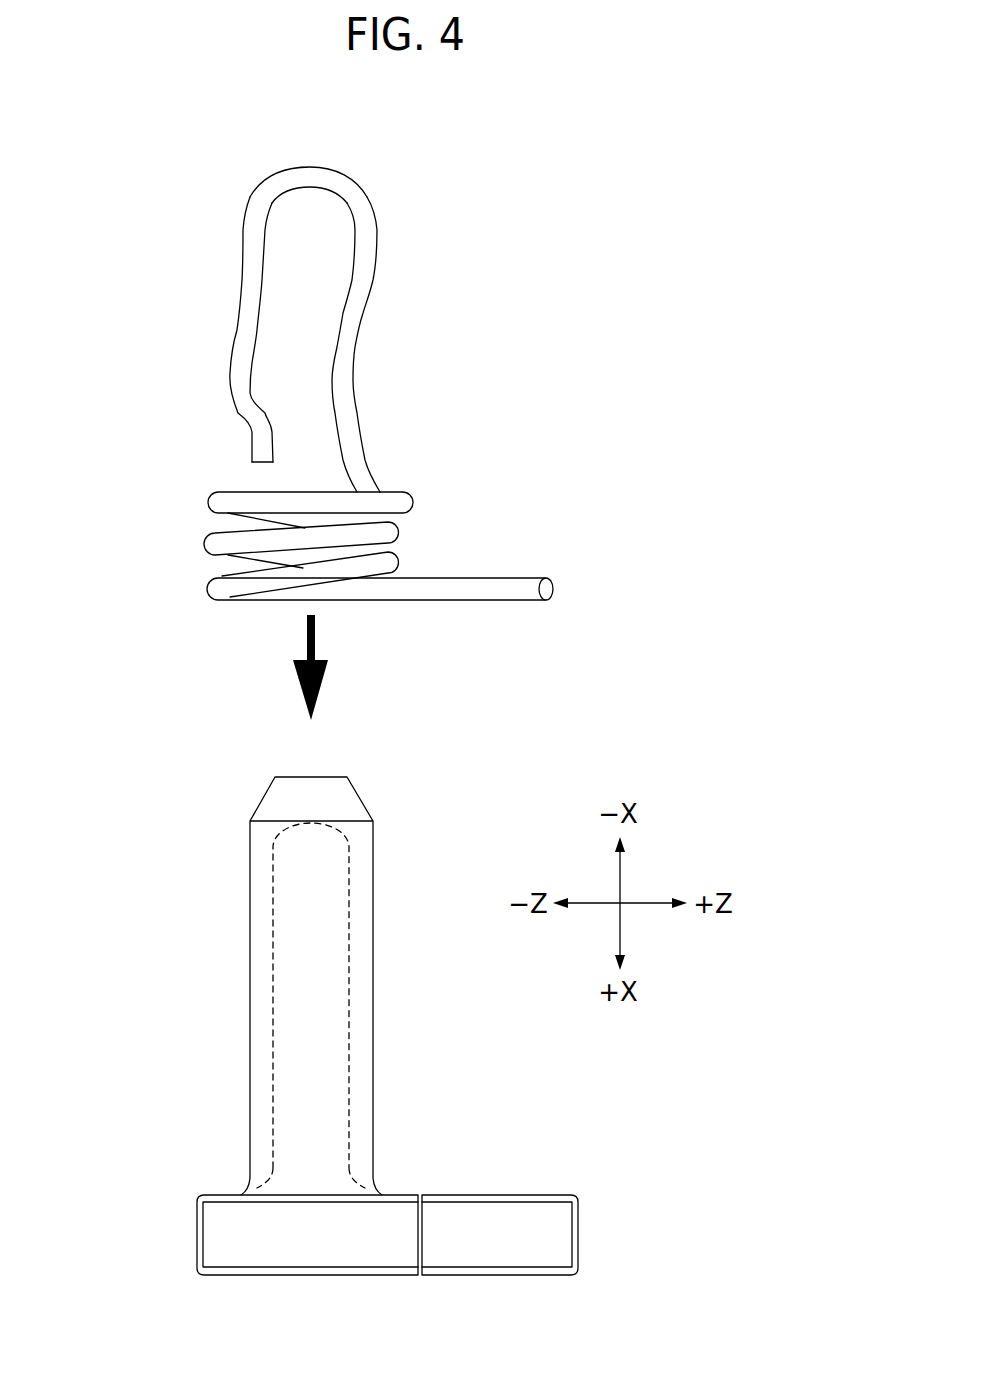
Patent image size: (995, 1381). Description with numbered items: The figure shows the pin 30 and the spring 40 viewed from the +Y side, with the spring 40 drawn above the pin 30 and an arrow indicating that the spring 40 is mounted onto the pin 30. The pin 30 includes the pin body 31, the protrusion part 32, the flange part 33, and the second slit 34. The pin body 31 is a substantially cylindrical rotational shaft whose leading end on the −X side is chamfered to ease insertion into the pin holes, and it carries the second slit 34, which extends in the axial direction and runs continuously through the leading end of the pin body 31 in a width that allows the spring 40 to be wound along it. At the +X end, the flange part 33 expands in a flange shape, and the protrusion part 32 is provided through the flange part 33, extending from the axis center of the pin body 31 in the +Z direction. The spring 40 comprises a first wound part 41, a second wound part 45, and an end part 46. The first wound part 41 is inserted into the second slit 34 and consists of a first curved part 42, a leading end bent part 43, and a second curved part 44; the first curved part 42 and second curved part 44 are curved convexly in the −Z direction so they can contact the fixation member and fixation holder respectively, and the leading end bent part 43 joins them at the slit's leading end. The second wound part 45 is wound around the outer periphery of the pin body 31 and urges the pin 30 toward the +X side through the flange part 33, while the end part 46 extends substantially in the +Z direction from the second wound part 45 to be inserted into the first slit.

The pin 30 is at (206, 835).
The pin body 31 is at (300, 953).
The protrusion part 32 is at (495, 1247).
The flange part 33 is at (315, 1248).
The second slit 34 is at (260, 1035).
The spring 40 is at (506, 92).
The first wound part 41 is at (473, 140).
The first curved part 42 is at (250, 328).
The leading end bent part 43 is at (316, 173).
The second curved part 44 is at (345, 380).
The second wound part 45 is at (250, 536).
The end part 46 is at (475, 588).